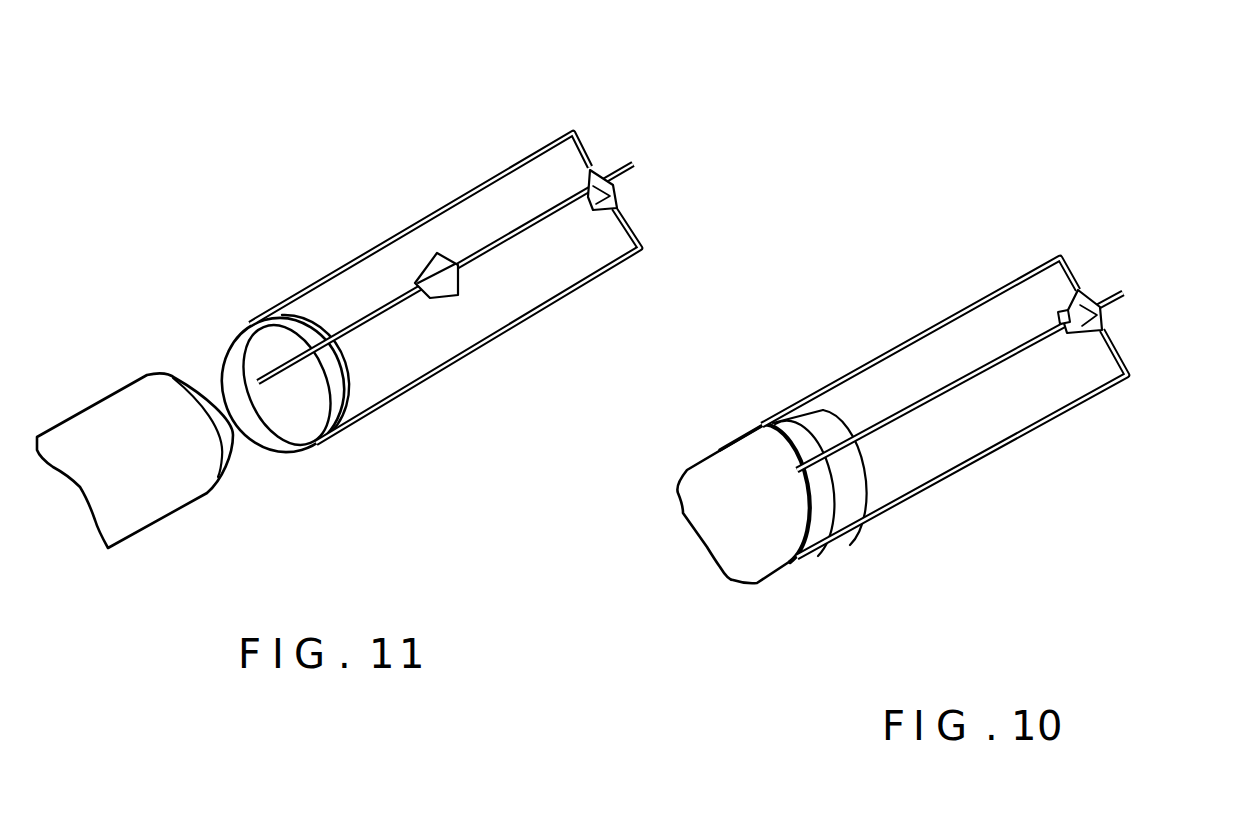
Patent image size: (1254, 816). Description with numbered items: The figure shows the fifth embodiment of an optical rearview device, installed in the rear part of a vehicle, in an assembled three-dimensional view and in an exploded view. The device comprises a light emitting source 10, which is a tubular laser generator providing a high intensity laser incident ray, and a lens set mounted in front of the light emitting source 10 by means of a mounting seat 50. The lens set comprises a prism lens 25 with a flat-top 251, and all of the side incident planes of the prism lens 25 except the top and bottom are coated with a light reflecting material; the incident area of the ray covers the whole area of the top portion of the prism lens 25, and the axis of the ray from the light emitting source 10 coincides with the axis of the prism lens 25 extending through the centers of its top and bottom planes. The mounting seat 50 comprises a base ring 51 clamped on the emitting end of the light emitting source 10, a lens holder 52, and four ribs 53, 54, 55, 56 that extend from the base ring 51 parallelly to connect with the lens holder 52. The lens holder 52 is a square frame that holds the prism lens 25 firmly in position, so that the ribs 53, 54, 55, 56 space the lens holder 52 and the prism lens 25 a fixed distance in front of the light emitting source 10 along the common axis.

In FIG. 11, the light emitting source 10 is at (188, 492).
In FIG. 10, the light emitting source 10 is at (836, 525).
In FIG. 11, the prism lens 25 is at (422, 275).
In FIG. 10, the prism lens 25 is at (1062, 315).
In FIG. 11, the flat-top 251 is at (416, 305).
In FIG. 11, the mounting seat 50 is at (491, 268).
In FIG. 10, the mounting seat 50 is at (989, 377).
In FIG. 11, the base ring 51 is at (293, 437).
In FIG. 10, the base ring 51 is at (820, 505).
In FIG. 11, the lens holder 52 is at (618, 188).
In FIG. 10, the lens holder 52 is at (1103, 318).
In FIG. 11, the rib 53 is at (508, 330).
In FIG. 10, the rib 53 is at (988, 453).
In FIG. 11, the rib 54 is at (508, 243).
In FIG. 10, the rib 54 is at (995, 365).
In FIG. 11, the rib 55 is at (453, 200).
In FIG. 10, the rib 55 is at (852, 373).
In FIG. 11, the rib 56 is at (270, 363).